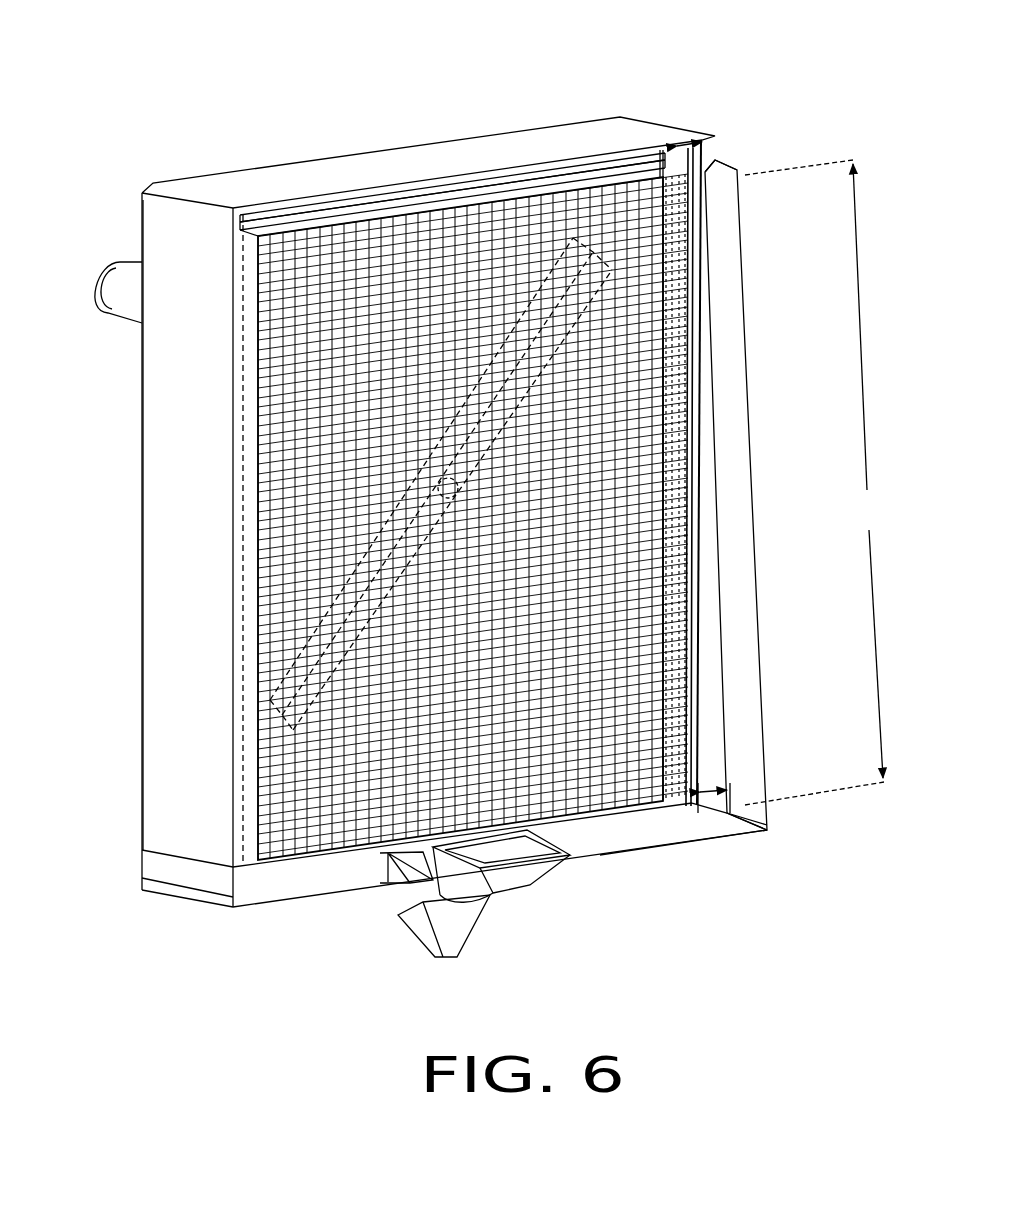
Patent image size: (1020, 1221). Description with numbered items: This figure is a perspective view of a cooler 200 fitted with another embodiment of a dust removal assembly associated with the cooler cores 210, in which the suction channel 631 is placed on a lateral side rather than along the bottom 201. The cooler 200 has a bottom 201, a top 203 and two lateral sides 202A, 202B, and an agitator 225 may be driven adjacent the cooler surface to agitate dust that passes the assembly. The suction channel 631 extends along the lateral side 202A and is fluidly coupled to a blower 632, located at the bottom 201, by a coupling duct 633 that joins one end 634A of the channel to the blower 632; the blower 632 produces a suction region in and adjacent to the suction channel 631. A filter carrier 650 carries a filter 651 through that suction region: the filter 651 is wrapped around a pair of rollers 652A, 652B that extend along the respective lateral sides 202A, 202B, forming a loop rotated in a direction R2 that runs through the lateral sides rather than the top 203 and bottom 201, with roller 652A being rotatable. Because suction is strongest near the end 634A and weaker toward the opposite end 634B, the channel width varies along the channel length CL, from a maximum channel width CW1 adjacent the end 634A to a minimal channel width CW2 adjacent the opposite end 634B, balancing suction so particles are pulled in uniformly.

The cooler 200 is at (458, 115).
The bottom 201 is at (306, 887).
The lateral side 202A is at (707, 160).
The lateral side 202B is at (233, 488).
The top 203 is at (605, 170).
The direction R2 is at (440, 197).
The cooler cores 210 is at (248, 348).
The agitator 225 is at (248, 428).
The filter carrier 650 is at (680, 145).
The filter 651 is at (630, 408).
The roller 652A is at (663, 150).
The roller 652B is at (255, 236).
The minimal channel width CW2 is at (700, 146).
The opposite end 634B is at (717, 180).
The channel length CL is at (815, 482).
The suction channel 631 is at (770, 663).
The maximum channel width CW1 is at (707, 785).
The end 634A is at (770, 812).
The coupling duct 633 is at (680, 860).
The blower 632 is at (500, 800).